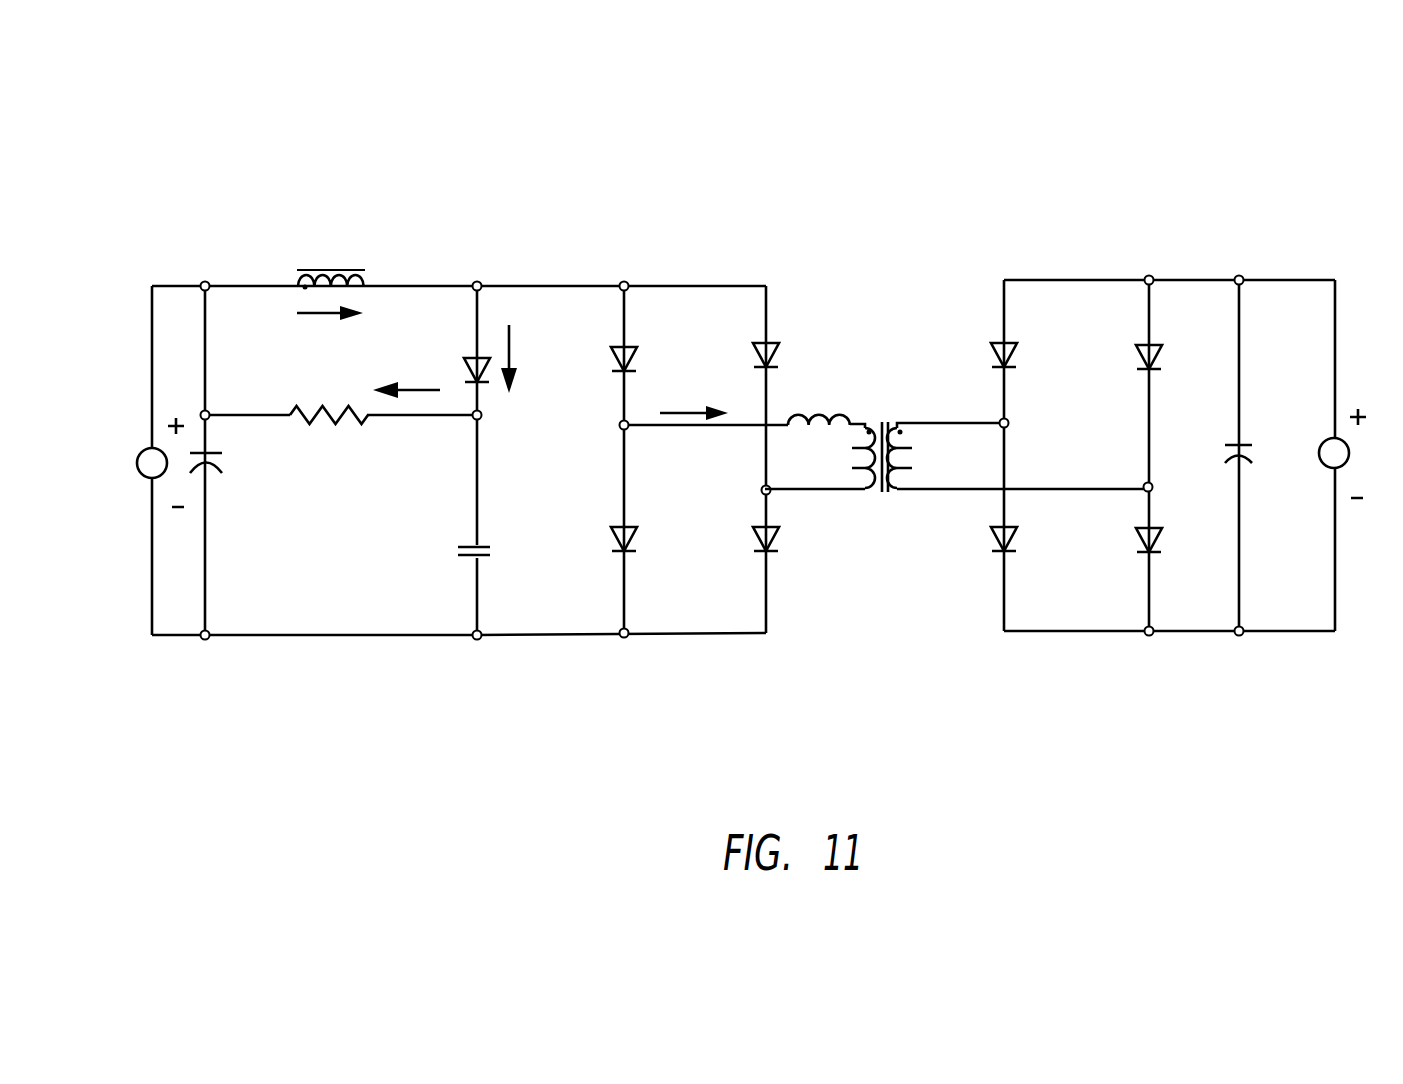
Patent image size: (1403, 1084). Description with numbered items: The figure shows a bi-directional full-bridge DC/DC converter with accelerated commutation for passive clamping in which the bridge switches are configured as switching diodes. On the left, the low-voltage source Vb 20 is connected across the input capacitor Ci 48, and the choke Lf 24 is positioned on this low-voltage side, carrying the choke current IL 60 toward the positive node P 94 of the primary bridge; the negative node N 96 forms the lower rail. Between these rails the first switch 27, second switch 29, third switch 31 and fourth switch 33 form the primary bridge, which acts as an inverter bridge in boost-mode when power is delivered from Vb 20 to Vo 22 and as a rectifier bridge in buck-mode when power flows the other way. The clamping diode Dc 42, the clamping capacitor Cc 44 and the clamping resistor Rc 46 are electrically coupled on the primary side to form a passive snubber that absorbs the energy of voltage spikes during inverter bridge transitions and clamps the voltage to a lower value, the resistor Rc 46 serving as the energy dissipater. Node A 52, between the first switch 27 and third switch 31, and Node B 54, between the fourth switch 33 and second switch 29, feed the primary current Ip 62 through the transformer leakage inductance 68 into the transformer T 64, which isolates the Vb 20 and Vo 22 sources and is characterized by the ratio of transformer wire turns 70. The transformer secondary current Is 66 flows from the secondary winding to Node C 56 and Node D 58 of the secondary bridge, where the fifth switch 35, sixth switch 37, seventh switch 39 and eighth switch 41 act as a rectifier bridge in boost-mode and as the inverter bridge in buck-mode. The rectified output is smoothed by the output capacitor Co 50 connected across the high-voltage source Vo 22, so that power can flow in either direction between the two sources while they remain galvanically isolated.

The Vb source 20 is at (112, 405).
The Vo source 22 is at (1385, 412).
The choke Lf 24 is at (262, 264).
The switch S1 27 is at (590, 353).
The switch S2 29 is at (714, 561).
The switch S3 31 is at (578, 556).
The switch S4 33 is at (730, 342).
The switch S5 35 is at (962, 350).
The switch S6 37 is at (1095, 558).
The switch S7 39 is at (957, 557).
The switch S8 41 is at (1108, 345).
The clamping diode Dc 42 is at (440, 362).
The clamping capacitor Cc 44 is at (442, 537).
The clamping resistor Rc 46 is at (323, 473).
The input capacitor Ci 48 is at (250, 490).
The output capacitor Co 50 is at (1285, 457).
The Node A 52 is at (605, 424).
The Node B 54 is at (745, 450).
The Node C 56 is at (1037, 425).
The Node D 58 is at (1169, 495).
The choke current IL 60 is at (312, 344).
The primary current Ip 62 is at (682, 460).
The transformer T 64 is at (883, 387).
The transformer secondary current Is 66 is at (945, 470).
The transformer leakage inductance Llk 68 is at (828, 378).
The ratio of transformer wire turns 1:nt 70 is at (889, 532).
The positive node P 94 is at (471, 252).
The negative node N 96 is at (462, 658).